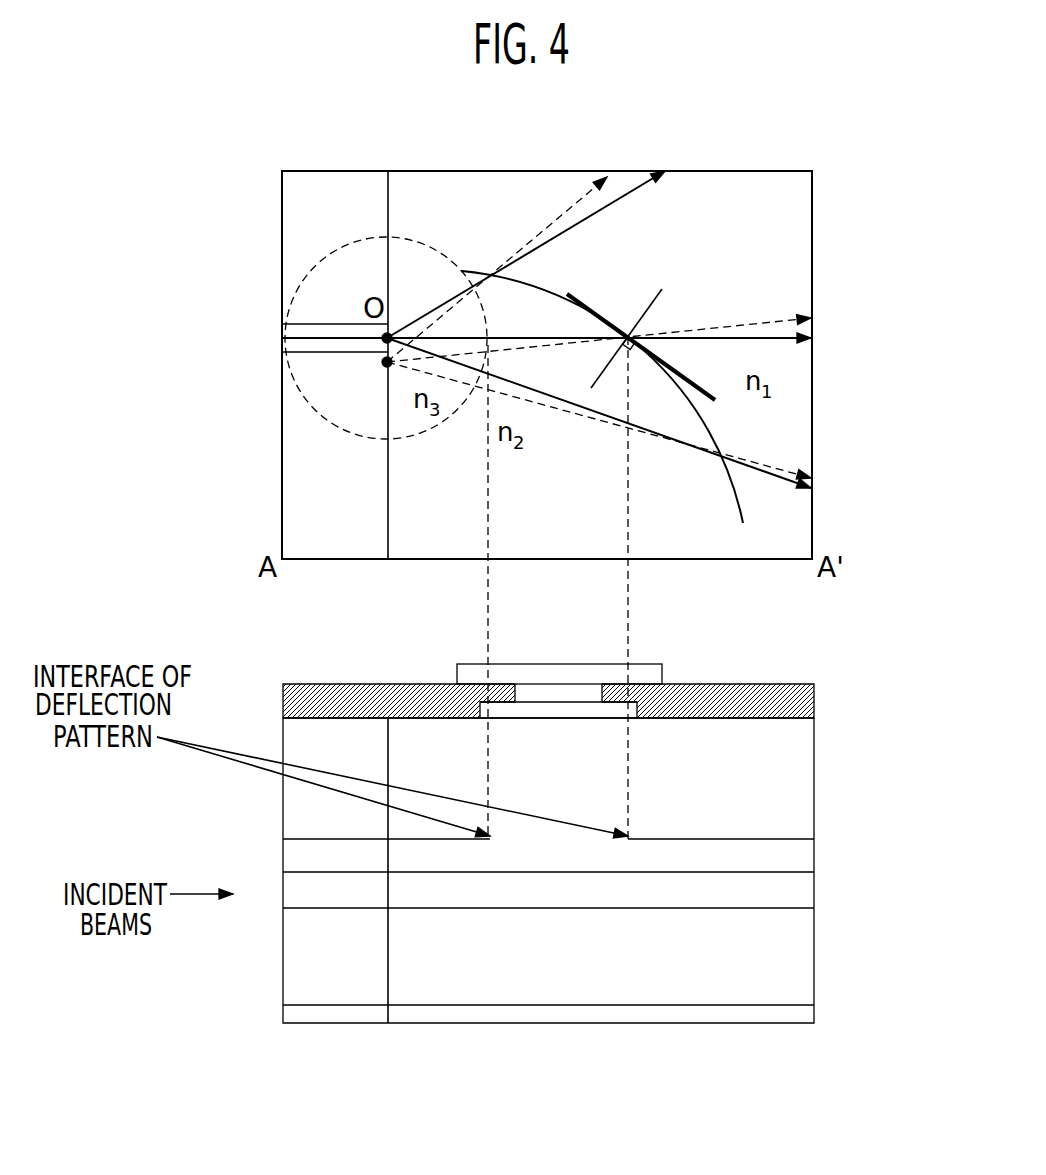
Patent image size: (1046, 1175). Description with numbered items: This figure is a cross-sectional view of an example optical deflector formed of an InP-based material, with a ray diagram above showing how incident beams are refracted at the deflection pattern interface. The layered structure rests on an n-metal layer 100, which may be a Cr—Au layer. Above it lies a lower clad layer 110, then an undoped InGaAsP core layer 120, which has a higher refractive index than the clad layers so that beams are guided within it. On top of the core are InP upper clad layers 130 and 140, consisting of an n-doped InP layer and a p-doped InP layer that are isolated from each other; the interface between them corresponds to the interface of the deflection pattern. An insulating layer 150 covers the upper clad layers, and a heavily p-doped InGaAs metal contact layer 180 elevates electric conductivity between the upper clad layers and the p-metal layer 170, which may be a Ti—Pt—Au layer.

The n-metal layer 100 is at (803, 1030).
The lower clad layer 110 is at (803, 960).
The core layer 120 is at (803, 890).
The upper clad layer 130 is at (803, 850).
The upper clad layer 140 is at (803, 782).
The insulating layer 150 is at (803, 705).
The p-metal layer 170 is at (652, 675).
The metal contact layer 180 is at (557, 710).